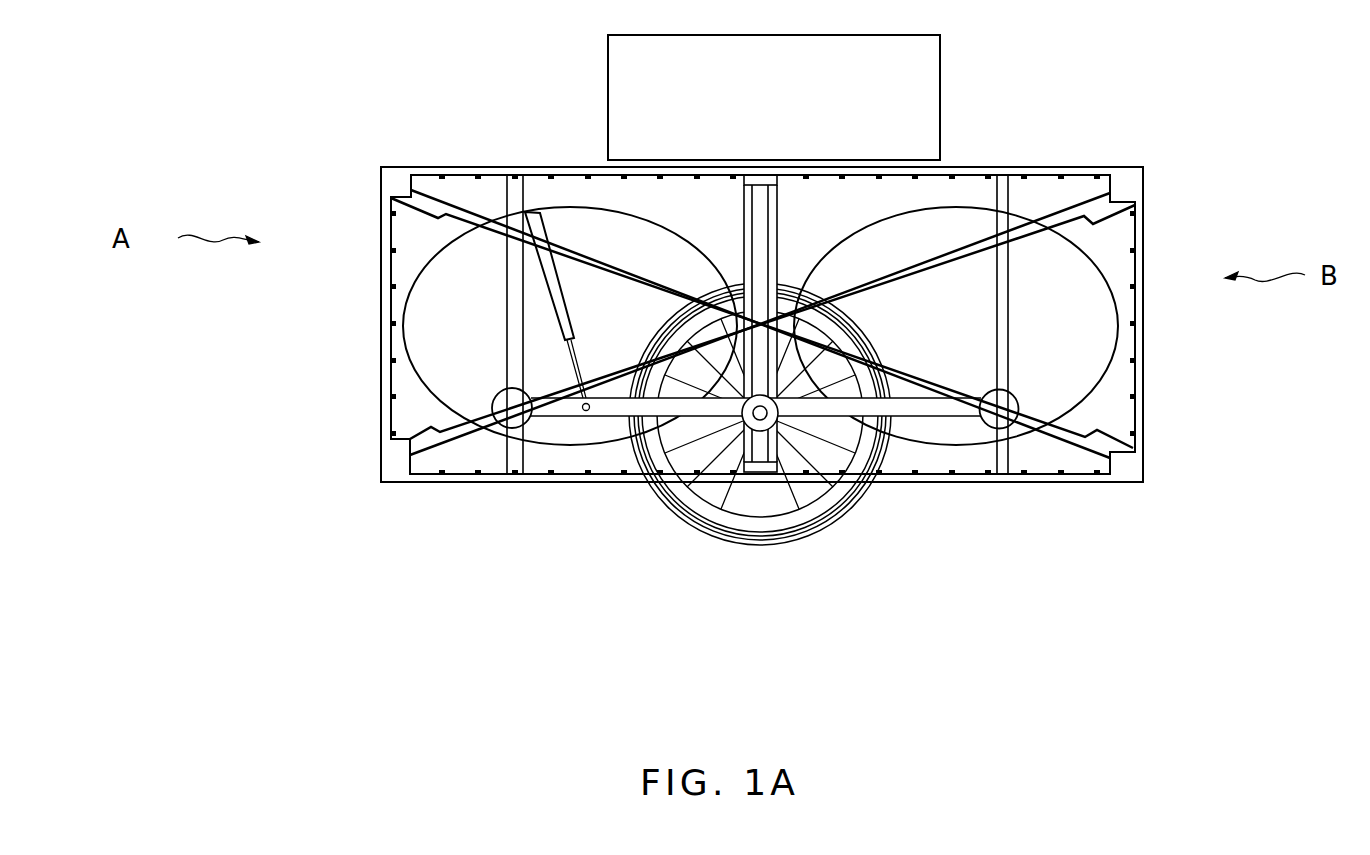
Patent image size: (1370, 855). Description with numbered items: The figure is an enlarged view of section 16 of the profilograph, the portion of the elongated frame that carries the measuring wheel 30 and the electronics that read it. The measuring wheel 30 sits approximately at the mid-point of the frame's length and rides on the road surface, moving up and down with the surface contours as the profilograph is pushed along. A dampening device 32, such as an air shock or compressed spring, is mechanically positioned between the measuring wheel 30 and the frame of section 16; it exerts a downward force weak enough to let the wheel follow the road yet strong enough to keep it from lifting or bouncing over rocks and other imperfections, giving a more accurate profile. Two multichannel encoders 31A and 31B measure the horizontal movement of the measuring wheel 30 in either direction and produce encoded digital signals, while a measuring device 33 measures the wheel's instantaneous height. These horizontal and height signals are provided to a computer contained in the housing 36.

The section 16 is at (1150, 424).
The measuring wheel 30 is at (827, 537).
The encoder 31A is at (498, 430).
The encoder 31B is at (1020, 427).
The dampening device 32 is at (568, 308).
The measuring device 33 is at (757, 473).
The housing 36 is at (940, 95).